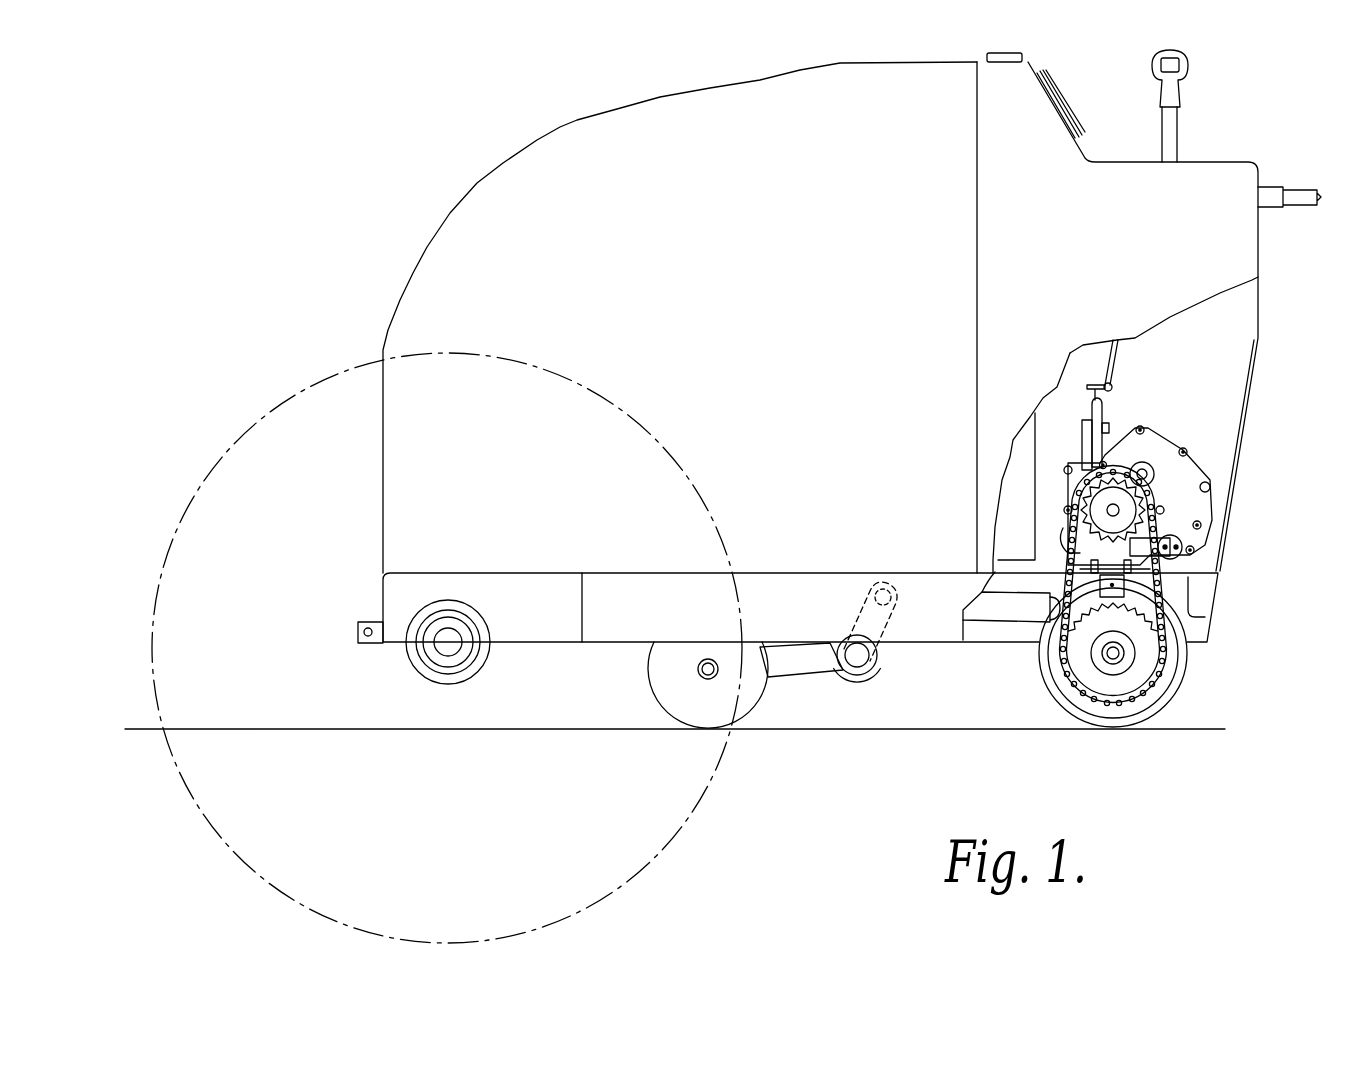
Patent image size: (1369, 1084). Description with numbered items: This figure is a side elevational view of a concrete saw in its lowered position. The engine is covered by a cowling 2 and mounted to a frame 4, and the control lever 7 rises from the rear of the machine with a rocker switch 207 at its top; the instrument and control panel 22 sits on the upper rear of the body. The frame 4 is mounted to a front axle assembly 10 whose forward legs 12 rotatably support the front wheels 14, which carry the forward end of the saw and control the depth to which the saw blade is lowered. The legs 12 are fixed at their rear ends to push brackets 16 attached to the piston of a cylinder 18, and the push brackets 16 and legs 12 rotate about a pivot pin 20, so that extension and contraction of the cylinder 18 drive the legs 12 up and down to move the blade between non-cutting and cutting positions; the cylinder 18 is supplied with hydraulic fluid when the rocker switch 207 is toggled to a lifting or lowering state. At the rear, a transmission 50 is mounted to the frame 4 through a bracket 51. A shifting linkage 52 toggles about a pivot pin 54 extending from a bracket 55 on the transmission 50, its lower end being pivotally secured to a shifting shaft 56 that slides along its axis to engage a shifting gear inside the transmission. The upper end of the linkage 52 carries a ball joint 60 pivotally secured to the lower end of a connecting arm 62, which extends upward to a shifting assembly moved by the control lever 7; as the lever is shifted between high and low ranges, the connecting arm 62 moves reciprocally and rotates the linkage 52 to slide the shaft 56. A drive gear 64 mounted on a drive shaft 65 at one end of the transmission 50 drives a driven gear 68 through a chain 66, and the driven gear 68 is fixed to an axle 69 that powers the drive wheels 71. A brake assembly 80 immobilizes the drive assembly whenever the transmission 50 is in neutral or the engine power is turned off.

The cowling 2 is at (453, 237).
The frame 4 is at (808, 585).
The control lever 7 is at (1175, 140).
The front axle assembly 10 is at (833, 710).
The forward legs 12 is at (802, 667).
The front wheels 14 is at (733, 703).
The push brackets 16 is at (885, 612).
The cylinder 18 is at (1030, 617).
The pivot pin 20 is at (863, 670).
The instrument and control panel 22 is at (1078, 88).
The transmission 50 is at (1195, 475).
The bracket 51 is at (1065, 553).
The shifting linkage 52 is at (1105, 405).
The pivot pin 54 is at (1110, 427).
The bracket 55 is at (1083, 437).
The shifting shaft 56 is at (1106, 463).
The ball joint 60 is at (1112, 384).
The connecting arm 62 is at (1112, 345).
The drive gear 64 is at (1127, 506).
The drive shaft 65 is at (1064, 505).
The chain 66 is at (1163, 592).
The driven gear 68 is at (1148, 657).
The axle 69 is at (1118, 658).
The drive wheels 71 is at (1078, 707).
The brake assembly 80 is at (1215, 548).
The rocker switch 207 is at (1190, 66).